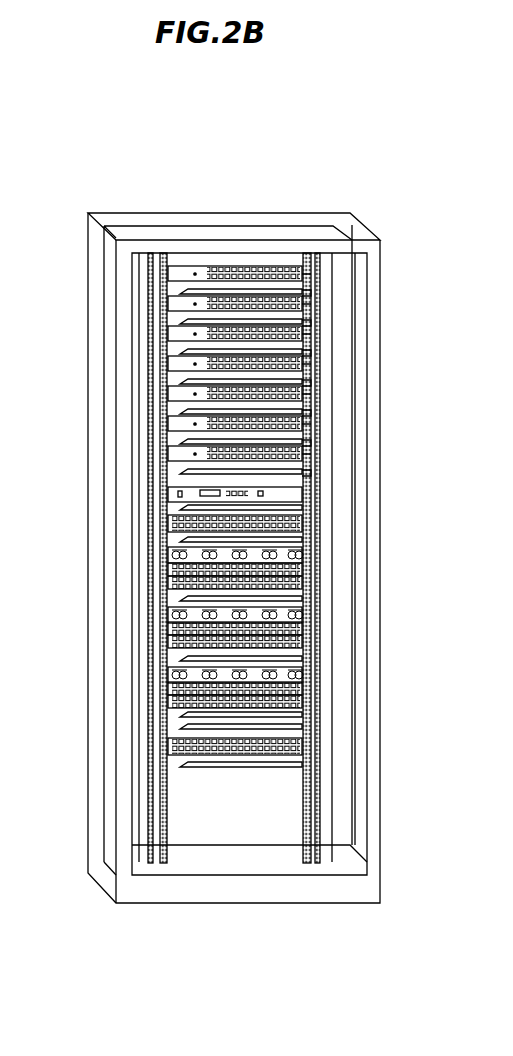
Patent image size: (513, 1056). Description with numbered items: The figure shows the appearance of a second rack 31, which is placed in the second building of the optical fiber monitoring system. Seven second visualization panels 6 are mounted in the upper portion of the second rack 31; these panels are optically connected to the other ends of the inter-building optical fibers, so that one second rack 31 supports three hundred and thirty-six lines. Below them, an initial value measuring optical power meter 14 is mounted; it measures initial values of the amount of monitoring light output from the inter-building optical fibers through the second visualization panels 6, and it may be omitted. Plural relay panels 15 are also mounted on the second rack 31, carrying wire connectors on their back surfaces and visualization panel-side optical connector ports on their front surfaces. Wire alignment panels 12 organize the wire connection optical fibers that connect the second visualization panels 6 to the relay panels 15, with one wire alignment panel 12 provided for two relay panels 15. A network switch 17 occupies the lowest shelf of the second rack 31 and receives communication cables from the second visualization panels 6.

The second rack 31 is at (197, 202).
The second visualization panel 6 is at (318, 332).
The initial value measuring optical power meter 14 is at (318, 495).
The relay panel 15 is at (318, 523).
The wire alignment panel 12 is at (163, 552).
The network switch 17 is at (318, 747).